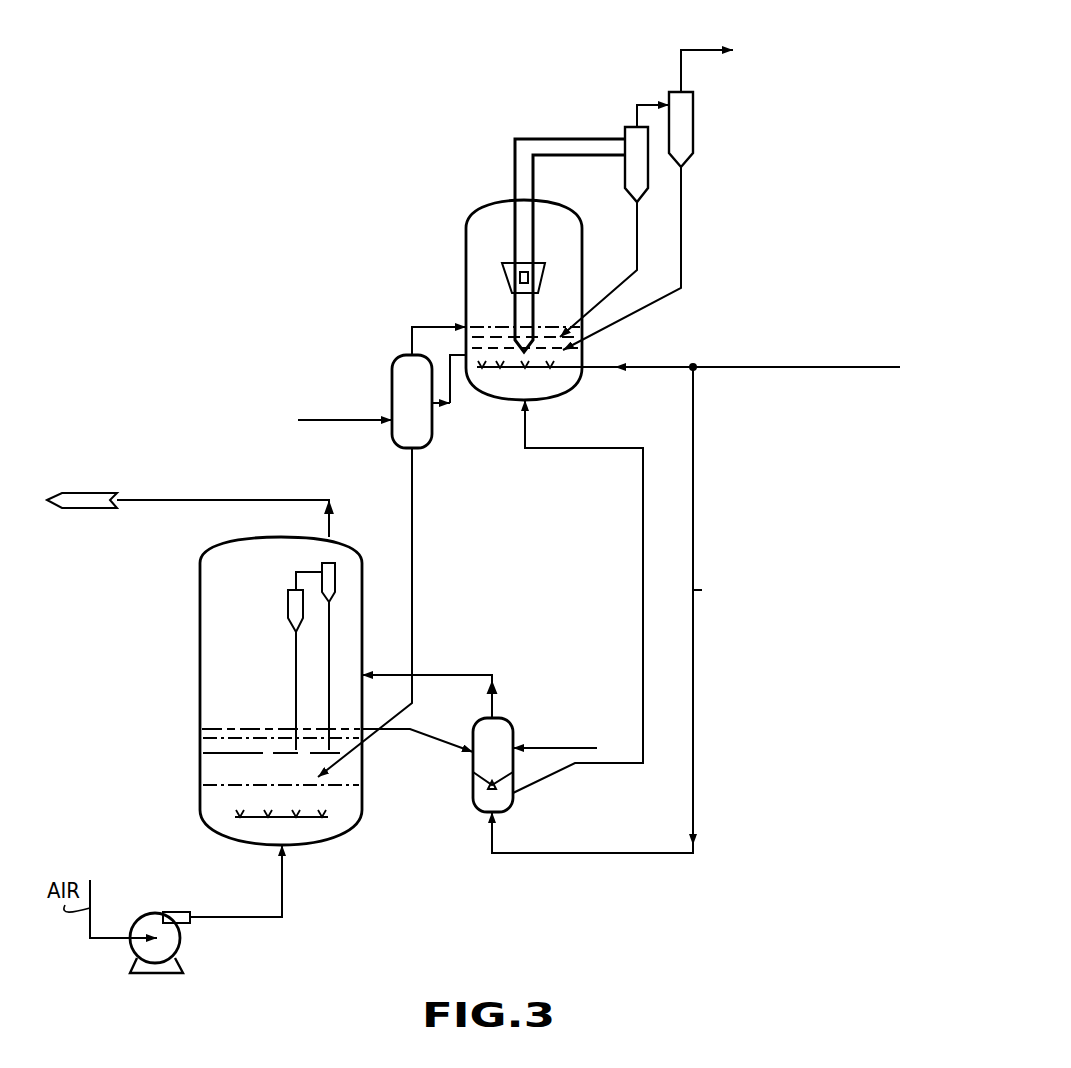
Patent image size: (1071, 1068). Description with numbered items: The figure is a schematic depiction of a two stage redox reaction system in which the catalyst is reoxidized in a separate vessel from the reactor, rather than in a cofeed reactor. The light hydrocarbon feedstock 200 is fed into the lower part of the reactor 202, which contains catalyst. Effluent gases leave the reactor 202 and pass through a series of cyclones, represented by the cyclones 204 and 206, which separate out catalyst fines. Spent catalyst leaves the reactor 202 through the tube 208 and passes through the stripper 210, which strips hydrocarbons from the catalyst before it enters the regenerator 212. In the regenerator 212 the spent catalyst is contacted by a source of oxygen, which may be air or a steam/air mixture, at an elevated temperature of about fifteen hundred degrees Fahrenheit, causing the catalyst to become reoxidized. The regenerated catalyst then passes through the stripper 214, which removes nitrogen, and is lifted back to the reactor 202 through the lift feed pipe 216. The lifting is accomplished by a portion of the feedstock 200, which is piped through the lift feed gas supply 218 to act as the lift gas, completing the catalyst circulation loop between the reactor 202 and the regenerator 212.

The light hydrocarbon feedstock 200 is at (844, 392).
The reactor 202 is at (466, 262).
The cyclone 204 is at (625, 133).
The cyclone 206 is at (693, 147).
The tube 208 is at (452, 394).
The stripper 210 is at (392, 385).
The regenerator 212 is at (200, 709).
The stripper 214 is at (508, 720).
The lift feed pipe 216 is at (643, 522).
The lift feed gas supply 218 is at (694, 780).